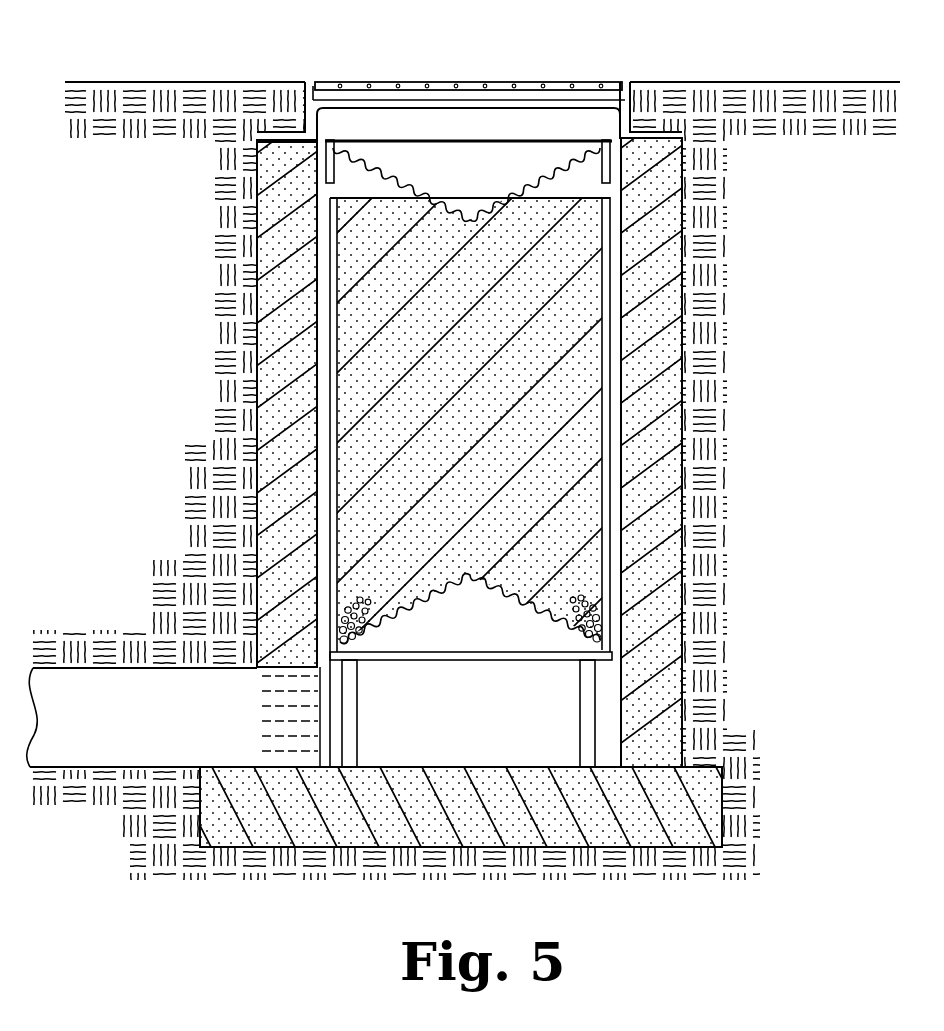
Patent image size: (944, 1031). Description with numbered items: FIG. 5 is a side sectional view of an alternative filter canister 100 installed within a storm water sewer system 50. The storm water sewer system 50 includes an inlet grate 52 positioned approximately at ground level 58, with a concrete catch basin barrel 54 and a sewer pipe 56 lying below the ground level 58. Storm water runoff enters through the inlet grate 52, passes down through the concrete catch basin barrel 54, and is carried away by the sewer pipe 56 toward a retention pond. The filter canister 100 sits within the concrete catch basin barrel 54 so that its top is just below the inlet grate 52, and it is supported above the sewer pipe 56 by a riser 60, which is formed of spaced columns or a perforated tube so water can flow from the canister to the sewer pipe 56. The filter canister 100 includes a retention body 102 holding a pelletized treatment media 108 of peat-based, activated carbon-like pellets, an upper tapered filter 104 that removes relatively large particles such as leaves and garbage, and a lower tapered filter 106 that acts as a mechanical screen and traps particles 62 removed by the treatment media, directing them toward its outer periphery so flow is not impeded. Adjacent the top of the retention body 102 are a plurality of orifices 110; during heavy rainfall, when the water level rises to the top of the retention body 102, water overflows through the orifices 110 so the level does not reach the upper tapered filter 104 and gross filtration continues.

The storm water sewer system 50 is at (620, 60).
The inlet grate 52 is at (414, 76).
The concrete catch basin barrel 54 is at (657, 353).
The sewer pipe 56 is at (110, 738).
The ground level 58 is at (150, 82).
The riser 60 is at (600, 720).
The particles 62 is at (603, 619).
The filter canister 100 is at (612, 437).
The retention body 102 is at (330, 367).
The upper tapered filter 104 is at (482, 175).
The lower tapered filter 106 is at (527, 620).
The pelletized treatment media 108 is at (400, 409).
The orifices 110 is at (345, 190).